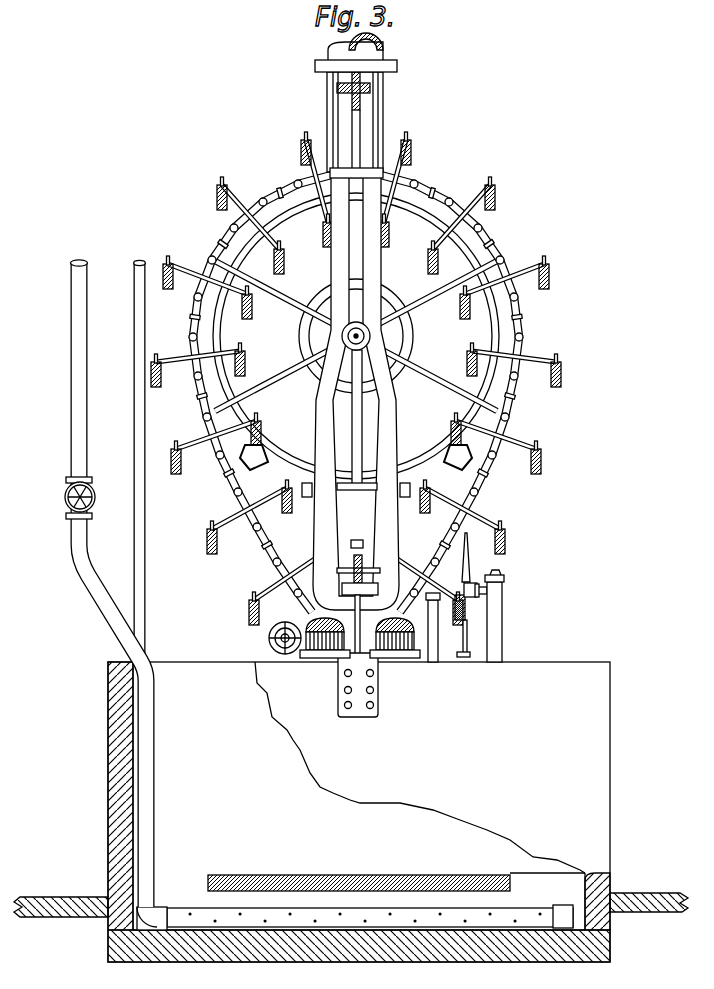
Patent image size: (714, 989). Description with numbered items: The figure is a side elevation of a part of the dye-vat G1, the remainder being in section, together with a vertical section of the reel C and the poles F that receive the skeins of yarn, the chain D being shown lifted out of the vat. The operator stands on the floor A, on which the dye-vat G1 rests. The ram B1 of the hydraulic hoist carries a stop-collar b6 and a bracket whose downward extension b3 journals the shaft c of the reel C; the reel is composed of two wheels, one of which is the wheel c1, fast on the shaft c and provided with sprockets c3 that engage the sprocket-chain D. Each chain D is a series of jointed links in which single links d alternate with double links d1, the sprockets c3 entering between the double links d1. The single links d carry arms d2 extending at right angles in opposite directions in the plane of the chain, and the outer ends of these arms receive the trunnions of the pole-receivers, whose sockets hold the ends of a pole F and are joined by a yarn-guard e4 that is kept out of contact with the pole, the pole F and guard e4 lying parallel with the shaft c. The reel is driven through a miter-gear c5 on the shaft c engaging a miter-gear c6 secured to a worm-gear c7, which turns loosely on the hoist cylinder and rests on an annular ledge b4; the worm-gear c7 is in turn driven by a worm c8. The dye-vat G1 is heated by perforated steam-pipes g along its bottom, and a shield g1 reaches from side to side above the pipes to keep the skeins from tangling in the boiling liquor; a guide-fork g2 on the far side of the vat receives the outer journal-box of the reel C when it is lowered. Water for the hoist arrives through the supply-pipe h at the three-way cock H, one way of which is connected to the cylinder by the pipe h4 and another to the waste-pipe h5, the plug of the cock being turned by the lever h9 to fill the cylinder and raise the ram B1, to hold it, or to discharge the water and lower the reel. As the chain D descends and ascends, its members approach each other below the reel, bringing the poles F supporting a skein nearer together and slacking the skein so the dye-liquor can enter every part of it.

The stop-collar b6 is at (398, 66).
The annular ledge or shelf b4 is at (346, 95).
The downward extension of bracket b3 is at (372, 118).
The double link d1 is at (433, 187).
The single link d is at (478, 213).
The arm d2 is at (508, 256).
The ram B1 is at (384, 270).
The wheel of reel c1 is at (324, 280).
The reel C is at (356, 336).
The shaft c is at (342, 338).
The miter-gear c5 is at (413, 333).
The yarn-guard e4 is at (470, 355).
The pole F is at (356, 399).
The outer vane F' is at (369, 382).
The sprocket-chain D is at (370, 393).
The perforated steam-pipe g is at (88, 383).
The supply-pipe h is at (147, 522).
The guide-fork g2 is at (400, 428).
The sprocket c3 is at (256, 470).
The miter-gear c6 is at (312, 624).
The worm-gear c7 is at (416, 660).
The worm c8 is at (268, 632).
The pipe h4 is at (468, 634).
The lever h9 is at (468, 560).
The three-way cock H is at (477, 581).
The waste-pipe h5 is at (503, 634).
The dye-vat G1 is at (359, 812).
The shield g1 is at (320, 876).
The floor A is at (351, 894).